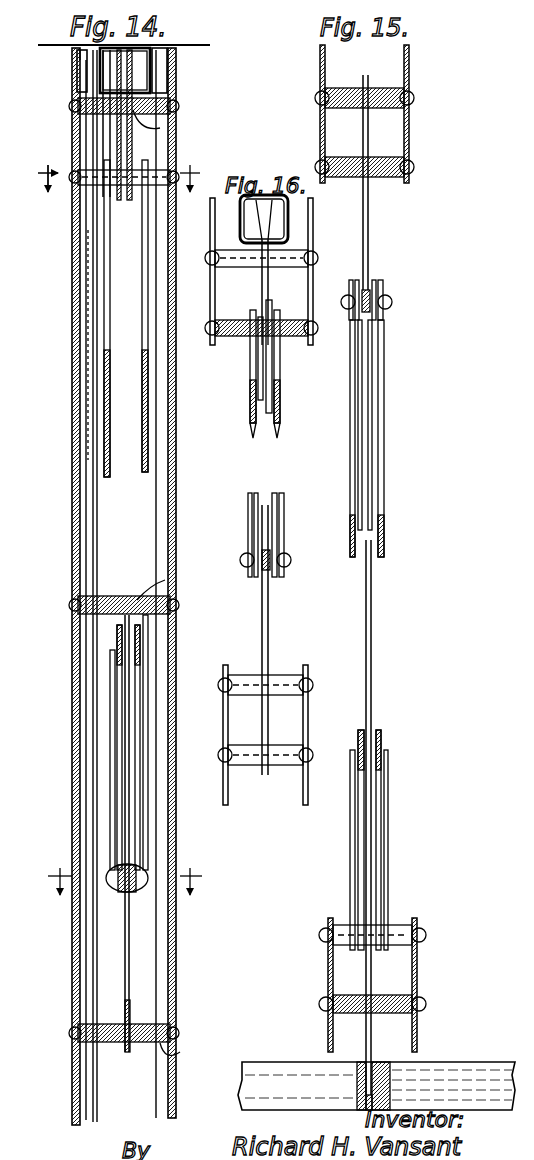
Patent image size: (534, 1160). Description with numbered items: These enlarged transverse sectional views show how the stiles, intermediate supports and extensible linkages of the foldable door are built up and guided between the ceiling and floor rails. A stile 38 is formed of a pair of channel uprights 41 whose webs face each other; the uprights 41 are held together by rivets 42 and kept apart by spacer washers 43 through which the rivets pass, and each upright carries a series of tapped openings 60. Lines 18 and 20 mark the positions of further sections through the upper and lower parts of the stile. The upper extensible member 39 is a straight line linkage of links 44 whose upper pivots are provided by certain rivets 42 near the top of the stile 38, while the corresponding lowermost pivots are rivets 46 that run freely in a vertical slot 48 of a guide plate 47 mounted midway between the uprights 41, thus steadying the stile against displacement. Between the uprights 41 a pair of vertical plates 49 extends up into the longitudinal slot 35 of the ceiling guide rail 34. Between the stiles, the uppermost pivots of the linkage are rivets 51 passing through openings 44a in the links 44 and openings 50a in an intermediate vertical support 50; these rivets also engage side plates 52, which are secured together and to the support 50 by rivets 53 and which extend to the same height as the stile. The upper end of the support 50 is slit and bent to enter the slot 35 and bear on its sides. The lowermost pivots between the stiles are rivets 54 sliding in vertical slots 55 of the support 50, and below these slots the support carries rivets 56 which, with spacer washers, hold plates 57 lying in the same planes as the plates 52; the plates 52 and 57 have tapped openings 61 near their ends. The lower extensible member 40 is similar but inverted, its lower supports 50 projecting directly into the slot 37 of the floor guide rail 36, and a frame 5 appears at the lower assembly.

In FIG. 15, the frame 5 is at (395, 930).
In FIG. 14, the section line 18— 18 is at (116, 193).
In FIG. 14, the section line 20— 20 is at (124, 896).
In FIG. 14, the guide rail 34 is at (100, 62).
In FIG. 16, the guide rail 34 is at (290, 207).
In FIG. 14, the longitudinal slot 35 is at (133, 62).
In FIG. 16, the longitudinal slot 35 is at (265, 235).
In FIG. 15, the guide rail 36 is at (395, 1090).
In FIG. 15, the longitudinal slot 37 is at (365, 1095).
In FIG. 14, the stile 38 is at (78, 520).
In FIG. 14, the upper extensible member 39 is at (110, 710).
In FIG. 16, the upper extensible member 39 is at (250, 407).
In FIG. 15, the lower extensible member 40 is at (350, 487).
In FIG. 14, the upright 41 is at (160, 513).
In FIG. 14, the rivet 42 is at (72, 106).
In FIG. 14, the spacer washer 43 is at (133, 130).
In FIG. 14, the link 44 is at (147, 273).
In FIG. 16, the link 44 is at (276, 430).
In FIG. 15, the link 44 is at (384, 810).
In FIG. 16, the opening 44a is at (312, 366).
In FIG. 14, the rivet 46 is at (137, 870).
In FIG. 14, the guide plate 47 is at (135, 1010).
In FIG. 14, the vertical slot 48 is at (133, 966).
In FIG. 14, the vertical plate 49 is at (120, 63).
In FIG. 16, the intermediate vertical support 50 is at (262, 298).
In FIG. 15, the intermediate vertical support 50 is at (372, 650).
In FIG. 16, the opening 50a is at (270, 330).
In FIG. 16, the rivet 51 is at (212, 340).
In FIG. 15, the rivet 51 is at (415, 935).
In FIG. 16, the side plate 52 is at (211, 300).
In FIG. 15, the side plate 52 is at (330, 970).
In FIG. 16, the rivet 53 is at (211, 262).
In FIG. 16, the rivet 54 is at (285, 566).
In FIG. 15, the rivet 54 is at (385, 305).
In FIG. 15, the vertical slot 55 is at (368, 255).
In FIG. 16, the rivet 56 is at (224, 688).
In FIG. 15, the rivet 56 is at (380, 165).
In FIG. 16, the plate 57 is at (308, 718).
In FIG. 15, the plate 57 is at (409, 84).
In FIG. 14, the tapped opening 60 is at (80, 55).
In FIG. 15, the tapped opening 61 is at (409, 60).